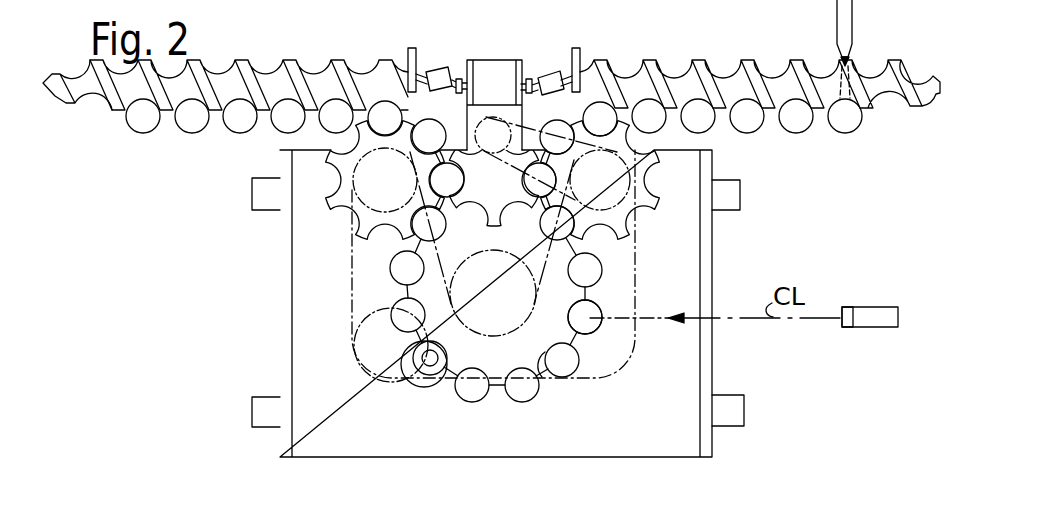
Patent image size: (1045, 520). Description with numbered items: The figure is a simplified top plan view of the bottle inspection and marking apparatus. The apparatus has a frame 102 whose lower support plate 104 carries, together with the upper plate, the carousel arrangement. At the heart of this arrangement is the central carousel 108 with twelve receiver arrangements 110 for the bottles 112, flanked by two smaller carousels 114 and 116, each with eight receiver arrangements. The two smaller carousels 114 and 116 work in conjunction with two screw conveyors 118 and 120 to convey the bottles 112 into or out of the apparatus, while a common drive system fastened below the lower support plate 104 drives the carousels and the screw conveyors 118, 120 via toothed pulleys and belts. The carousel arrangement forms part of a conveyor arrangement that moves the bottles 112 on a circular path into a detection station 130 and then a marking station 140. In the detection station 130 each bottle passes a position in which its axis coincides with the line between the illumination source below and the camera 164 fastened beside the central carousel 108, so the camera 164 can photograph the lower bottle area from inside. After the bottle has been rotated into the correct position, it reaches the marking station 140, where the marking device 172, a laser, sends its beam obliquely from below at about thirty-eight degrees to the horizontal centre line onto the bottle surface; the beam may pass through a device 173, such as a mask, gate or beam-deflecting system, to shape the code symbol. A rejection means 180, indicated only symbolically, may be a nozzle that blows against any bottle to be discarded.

The frame 102 is at (270, 408).
The lower support plate 104 is at (490, 437).
The central carousel 108 is at (540, 360).
The receiver arrangements 110 is at (474, 207).
The bottles 112 is at (590, 270).
The smaller carousel 114 is at (343, 195).
The smaller carousel 116 is at (646, 204).
The screw conveyor 118 is at (299, 80).
The screw conveyor 120 is at (705, 72).
The detection station 130 is at (420, 388).
The marking station 140 is at (611, 323).
The camera 164 is at (418, 358).
The marking device 172 is at (868, 316).
The device 173 is at (847, 326).
The rejection means 180 is at (853, 30).